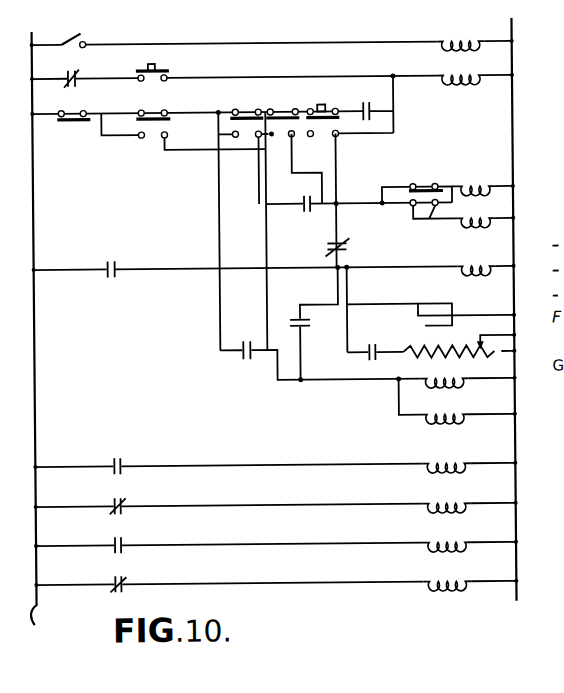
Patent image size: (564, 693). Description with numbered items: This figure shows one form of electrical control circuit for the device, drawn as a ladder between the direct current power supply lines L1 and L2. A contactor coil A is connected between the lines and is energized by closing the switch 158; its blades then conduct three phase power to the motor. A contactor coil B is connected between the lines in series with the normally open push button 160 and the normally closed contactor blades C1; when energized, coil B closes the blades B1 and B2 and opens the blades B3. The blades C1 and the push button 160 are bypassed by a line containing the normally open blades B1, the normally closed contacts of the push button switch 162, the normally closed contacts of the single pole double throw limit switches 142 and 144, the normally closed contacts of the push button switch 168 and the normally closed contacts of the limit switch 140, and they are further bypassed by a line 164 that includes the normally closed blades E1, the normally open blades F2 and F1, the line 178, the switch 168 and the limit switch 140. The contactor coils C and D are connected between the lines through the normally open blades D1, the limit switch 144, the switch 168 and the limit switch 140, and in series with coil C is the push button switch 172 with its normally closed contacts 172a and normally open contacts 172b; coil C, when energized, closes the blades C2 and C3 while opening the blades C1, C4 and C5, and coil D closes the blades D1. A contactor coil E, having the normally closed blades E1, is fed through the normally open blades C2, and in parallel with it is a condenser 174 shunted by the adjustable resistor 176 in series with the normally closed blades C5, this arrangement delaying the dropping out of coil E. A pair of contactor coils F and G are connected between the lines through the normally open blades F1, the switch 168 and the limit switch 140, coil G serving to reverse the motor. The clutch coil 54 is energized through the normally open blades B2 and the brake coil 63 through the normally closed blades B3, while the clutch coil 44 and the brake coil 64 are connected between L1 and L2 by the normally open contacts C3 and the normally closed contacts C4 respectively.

The switch 158 is at (72, 35).
The push button 160 is at (169, 70).
The limit switch 140 is at (77, 109).
The push button switch 168 is at (157, 114).
The single pole double throw limit switch 144 is at (250, 97).
The single pole double throw limit switch 142 is at (283, 110).
The push button switch 162 is at (325, 110).
The line 164 is at (338, 167).
The push button switch 172 is at (436, 190).
The normally closed contacts 172a is at (416, 180).
The normally open contacts 172b is at (429, 221).
The condenser 174 is at (435, 305).
The adjustable resistor 176 is at (428, 349).
The line 178 is at (219, 315).
The coil 54 is at (459, 463).
The coil 63 is at (460, 502).
The coil 44 is at (462, 541).
The coil 64 is at (463, 581).
The contactor coil A is at (478, 28).
The contactor coil B is at (480, 62).
The contactor coil C is at (476, 184).
The contactor coil D is at (485, 208).
The contactor coil E is at (489, 250).
The contactor coil F is at (462, 383).
The contactor coil G is at (423, 418).
The normally open blades B1 is at (375, 116).
The normally open blades B2 is at (134, 452).
The normally closed blades B3 is at (132, 494).
The normally closed contactor blades C1 is at (80, 73).
The normally open contactor blades C2 is at (116, 267).
The normally open contacts C3 is at (138, 532).
The normally closed contacts C4 is at (140, 572).
The normally closed blades C5 is at (367, 354).
The normally open contact blades D1 is at (308, 213).
The normally closed blades E1 is at (349, 248).
The normally open contactor blades F1 is at (246, 358).
The normally open blades F2 is at (311, 326).
The direct current power supply line L1 is at (42, 337).
The direct current power supply line L2 is at (520, 593).